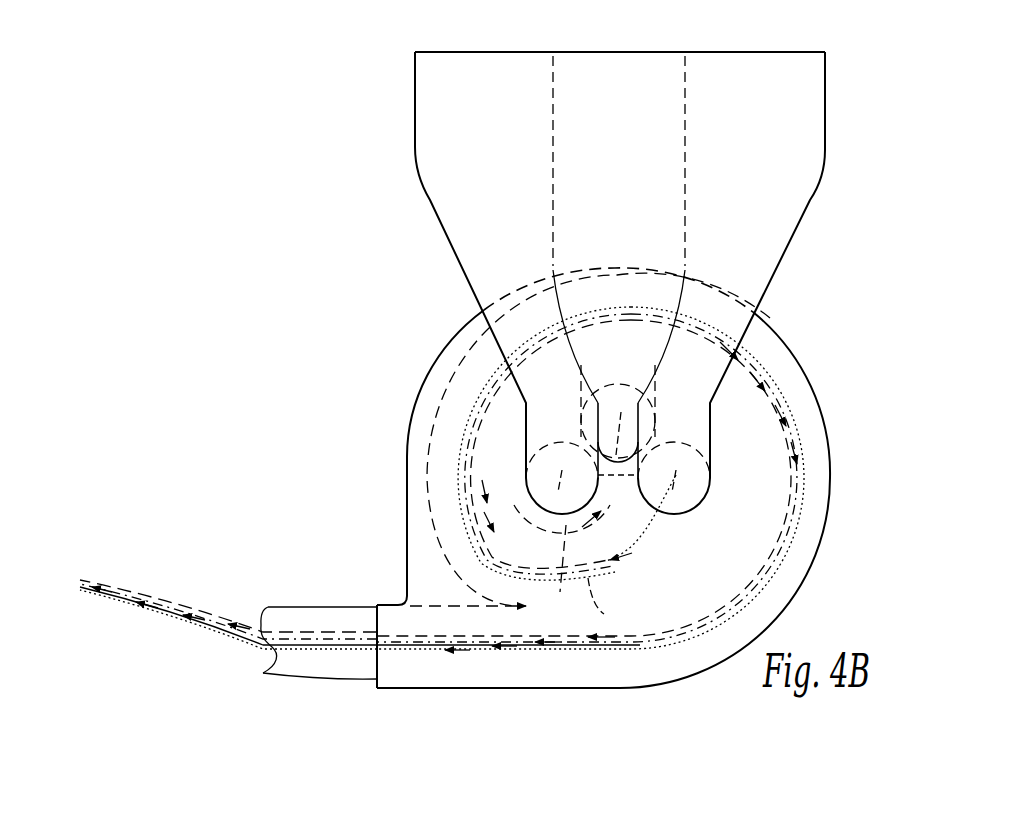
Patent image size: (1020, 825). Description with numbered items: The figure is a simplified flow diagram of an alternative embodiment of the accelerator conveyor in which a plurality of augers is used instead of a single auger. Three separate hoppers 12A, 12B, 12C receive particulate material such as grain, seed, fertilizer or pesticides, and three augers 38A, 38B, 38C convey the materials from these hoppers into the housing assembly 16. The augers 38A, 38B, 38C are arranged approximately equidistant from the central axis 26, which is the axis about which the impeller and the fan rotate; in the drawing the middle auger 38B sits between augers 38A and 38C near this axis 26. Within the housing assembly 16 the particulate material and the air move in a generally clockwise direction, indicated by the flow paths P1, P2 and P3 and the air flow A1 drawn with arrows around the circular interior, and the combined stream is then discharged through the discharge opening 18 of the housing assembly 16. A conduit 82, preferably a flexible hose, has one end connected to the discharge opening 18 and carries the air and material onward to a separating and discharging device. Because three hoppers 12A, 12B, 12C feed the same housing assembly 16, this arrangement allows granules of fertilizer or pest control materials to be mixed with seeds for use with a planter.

The hopper 12A is at (814, 122).
The hopper 12B is at (603, 51).
The hopper 12C is at (416, 80).
The housing assembly 16 is at (423, 376).
The discharge opening 18 is at (383, 604).
The central axis 26 is at (624, 462).
The auger 38A is at (700, 503).
The auger 38B is at (633, 480).
The auger 38C is at (557, 497).
The conduit 82 is at (307, 606).
The flow path P1 is at (640, 522).
The flow path P2 is at (567, 591).
The flow path P3 is at (477, 446).
The air flow A1 is at (604, 616).